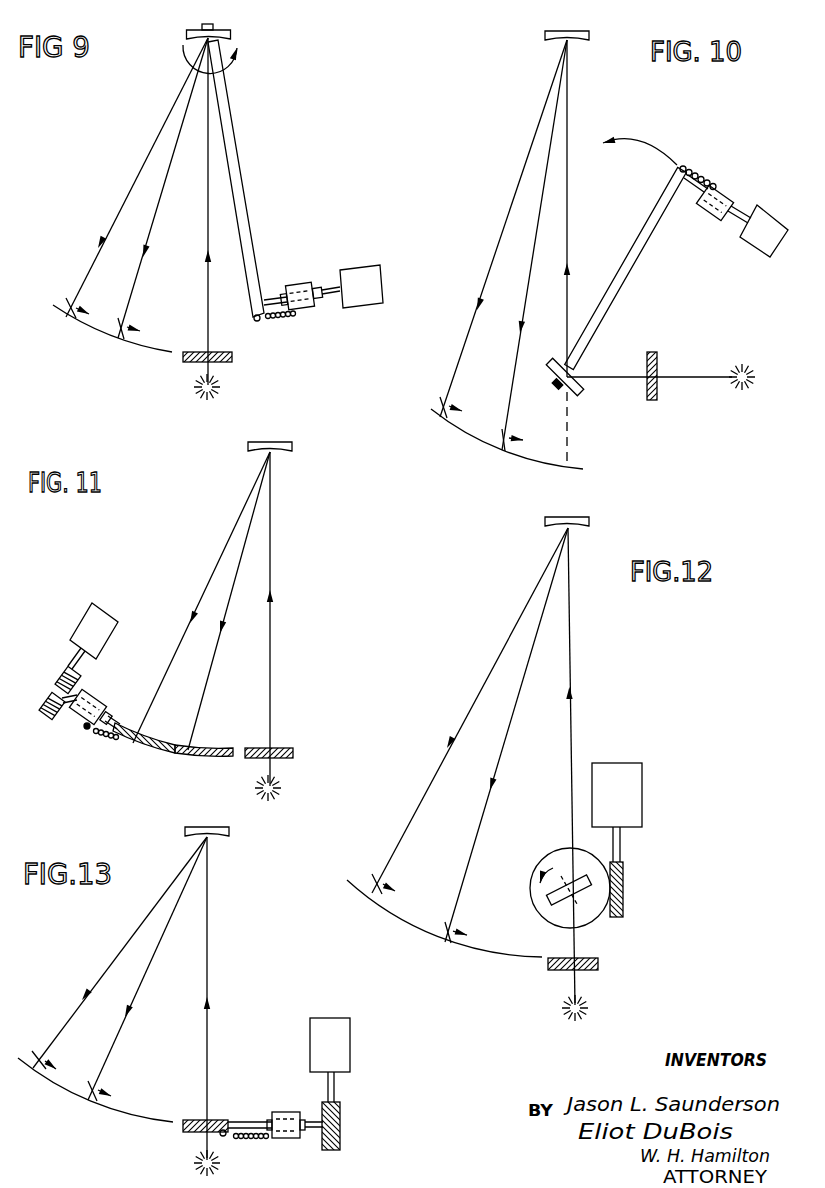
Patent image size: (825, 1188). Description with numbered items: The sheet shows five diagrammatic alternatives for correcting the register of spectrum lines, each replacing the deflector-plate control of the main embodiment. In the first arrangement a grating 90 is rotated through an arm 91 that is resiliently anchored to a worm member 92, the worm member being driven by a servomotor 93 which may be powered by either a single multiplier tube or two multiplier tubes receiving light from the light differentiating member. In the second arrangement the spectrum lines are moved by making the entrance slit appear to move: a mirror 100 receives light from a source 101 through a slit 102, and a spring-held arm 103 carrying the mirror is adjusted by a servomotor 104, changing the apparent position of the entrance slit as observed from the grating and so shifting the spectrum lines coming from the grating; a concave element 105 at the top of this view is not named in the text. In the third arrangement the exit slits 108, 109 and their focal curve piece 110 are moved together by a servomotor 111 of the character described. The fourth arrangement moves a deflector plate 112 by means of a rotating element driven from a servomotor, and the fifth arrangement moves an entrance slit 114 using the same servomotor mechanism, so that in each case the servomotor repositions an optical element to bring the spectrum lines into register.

In FIG. 9, the grating 90 is at (229, 31).
In FIG. 9, the arm 91 is at (245, 218).
In FIG. 9, the worm member 92 is at (299, 283).
In FIG. 9, the servomotor 93 is at (368, 274).
In FIG. 10, the mirror 100 is at (552, 378).
In FIG. 10, the source 101 is at (748, 367).
In FIG. 10, the slit 102 is at (657, 362).
In FIG. 10, the spring-held arm 103 is at (617, 291).
In FIG. 10, the servomotor 104 is at (763, 222).
In FIG. 10, the concave mirror 105 is at (585, 32).
In FIG. 11, the exit slit 108 is at (136, 742).
In FIG. 11, the exit slit 109 is at (188, 753).
In FIG. 11, the focal curve piece 110 is at (293, 748).
In FIG. 11, the servomotor 111 is at (105, 626).
In FIG. 12, the deflector plate 112 is at (593, 883).
In FIG. 13, the entrance slit 114 is at (217, 1121).